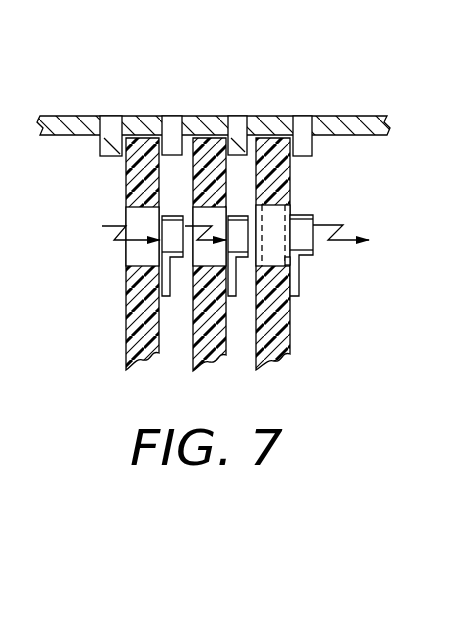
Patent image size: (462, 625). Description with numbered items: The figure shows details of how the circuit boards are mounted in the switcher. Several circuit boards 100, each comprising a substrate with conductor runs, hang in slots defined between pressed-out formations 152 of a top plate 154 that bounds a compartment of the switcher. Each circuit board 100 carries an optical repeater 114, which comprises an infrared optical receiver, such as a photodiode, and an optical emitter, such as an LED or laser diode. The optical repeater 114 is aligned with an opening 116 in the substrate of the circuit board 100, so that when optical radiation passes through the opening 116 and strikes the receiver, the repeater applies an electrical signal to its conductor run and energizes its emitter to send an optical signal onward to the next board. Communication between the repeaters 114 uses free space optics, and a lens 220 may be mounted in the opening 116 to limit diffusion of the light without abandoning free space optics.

The circuit board 100 is at (277, 366).
The optical repeater 114 is at (303, 215).
The opening 116 is at (126, 254).
The pressed-out formation 152 is at (115, 158).
The top plate 154 is at (307, 116).
The lens 220 is at (273, 252).